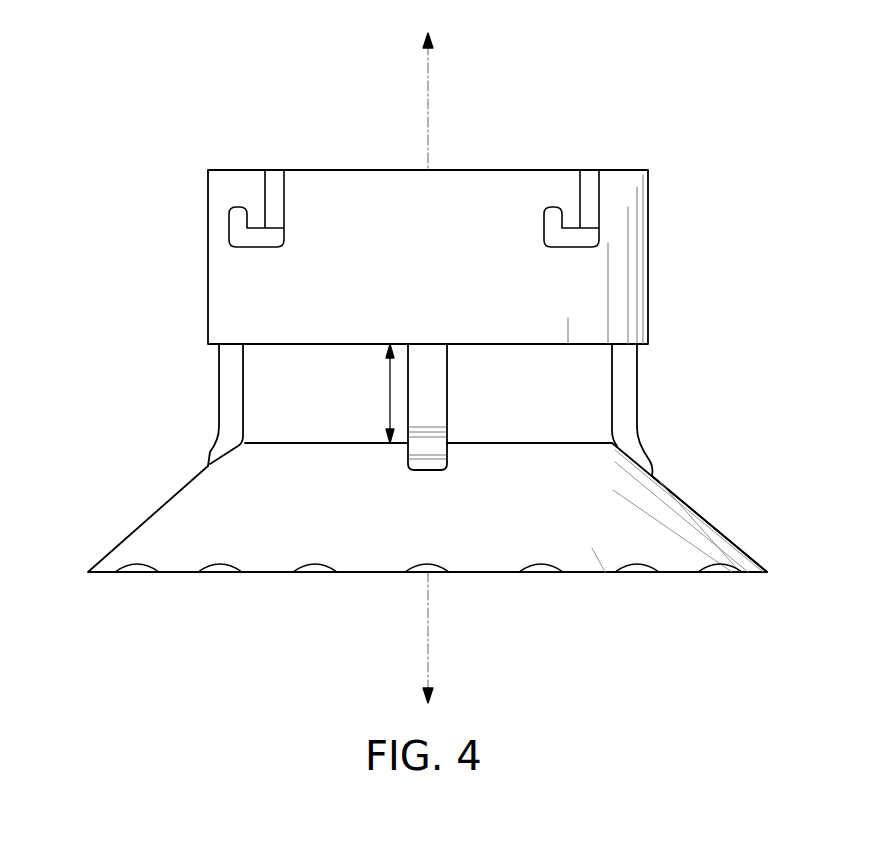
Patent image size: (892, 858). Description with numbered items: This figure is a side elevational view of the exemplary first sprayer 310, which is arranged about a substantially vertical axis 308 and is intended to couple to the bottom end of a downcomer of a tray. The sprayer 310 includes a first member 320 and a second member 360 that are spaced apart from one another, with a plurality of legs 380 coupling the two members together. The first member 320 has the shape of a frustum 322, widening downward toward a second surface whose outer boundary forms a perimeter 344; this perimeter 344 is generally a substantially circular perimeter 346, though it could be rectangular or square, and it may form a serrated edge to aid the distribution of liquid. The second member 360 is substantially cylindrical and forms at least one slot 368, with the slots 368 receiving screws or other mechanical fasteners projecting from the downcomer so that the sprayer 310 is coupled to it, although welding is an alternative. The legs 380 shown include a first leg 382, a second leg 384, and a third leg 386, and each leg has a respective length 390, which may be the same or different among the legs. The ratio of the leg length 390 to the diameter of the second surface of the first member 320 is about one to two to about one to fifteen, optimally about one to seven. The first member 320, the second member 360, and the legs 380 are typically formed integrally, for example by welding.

The substantially vertical axis 308 is at (428, 113).
The first sprayer 310 is at (678, 82).
The first member 320 is at (429, 533).
The frustum 322 is at (140, 478).
The perimeter 344 is at (712, 592).
The substantially circular perimeter 346 is at (142, 592).
The second member 360 is at (428, 257).
The slot 368 is at (262, 250).
The plurality of legs 380 is at (692, 432).
The first leg 382 is at (218, 383).
The second leg 384 is at (440, 406).
The third leg 386 is at (638, 383).
The length 390 is at (388, 390).